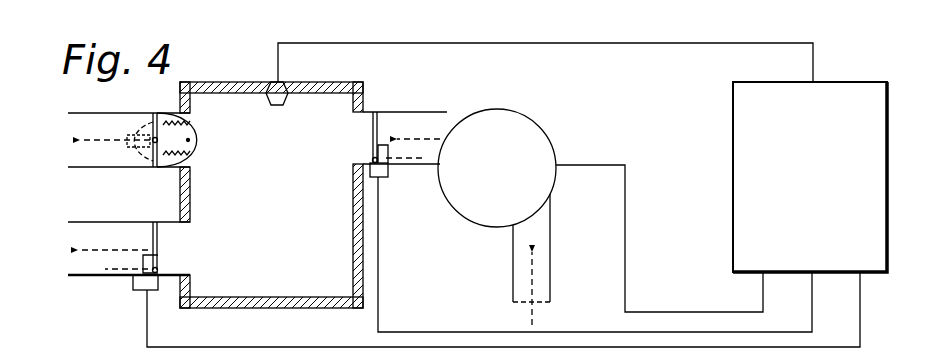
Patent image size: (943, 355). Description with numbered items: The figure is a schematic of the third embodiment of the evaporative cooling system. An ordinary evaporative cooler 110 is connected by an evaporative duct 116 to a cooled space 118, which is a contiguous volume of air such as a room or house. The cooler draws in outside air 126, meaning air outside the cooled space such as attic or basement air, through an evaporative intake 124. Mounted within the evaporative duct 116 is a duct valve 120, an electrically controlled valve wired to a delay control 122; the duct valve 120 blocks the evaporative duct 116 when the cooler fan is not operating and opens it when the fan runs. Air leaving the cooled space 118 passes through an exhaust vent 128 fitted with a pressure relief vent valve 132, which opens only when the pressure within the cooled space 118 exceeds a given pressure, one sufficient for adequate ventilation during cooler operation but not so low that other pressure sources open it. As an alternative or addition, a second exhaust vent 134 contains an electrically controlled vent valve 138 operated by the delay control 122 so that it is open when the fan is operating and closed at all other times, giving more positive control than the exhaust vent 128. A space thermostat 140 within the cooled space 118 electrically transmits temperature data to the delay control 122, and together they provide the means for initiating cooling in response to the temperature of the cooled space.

The evaporative cooler 110 is at (545, 140).
The evaporative duct 116 is at (454, 91).
The cooled space 118 is at (304, 273).
The duct valve 120 is at (373, 137).
The delay control 122 is at (808, 225).
The evaporative intake 124 is at (551, 226).
The outside air 126 is at (593, 318).
The exhaust vent 128 is at (188, 140).
The pressure relief vent valve 132 is at (132, 173).
The exhaust vent 134 is at (174, 256).
The electrically controlled vent valve 138 is at (150, 228).
The space thermostat 140 is at (288, 82).